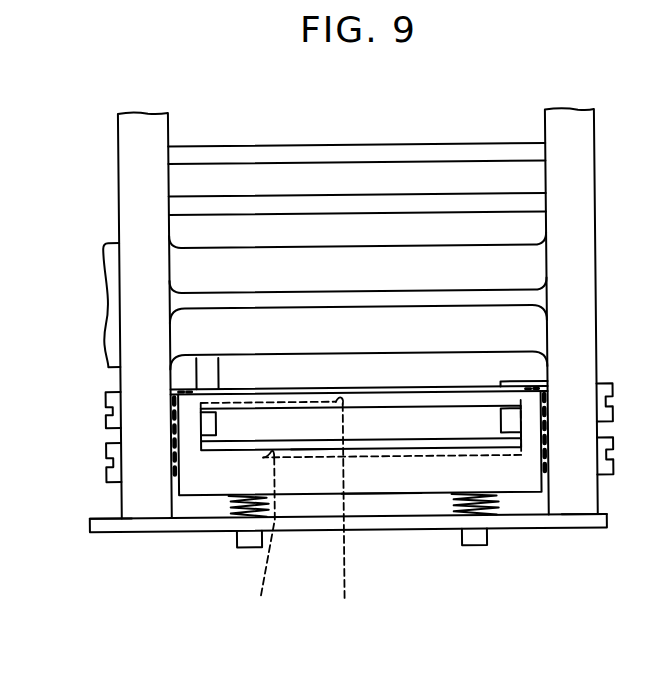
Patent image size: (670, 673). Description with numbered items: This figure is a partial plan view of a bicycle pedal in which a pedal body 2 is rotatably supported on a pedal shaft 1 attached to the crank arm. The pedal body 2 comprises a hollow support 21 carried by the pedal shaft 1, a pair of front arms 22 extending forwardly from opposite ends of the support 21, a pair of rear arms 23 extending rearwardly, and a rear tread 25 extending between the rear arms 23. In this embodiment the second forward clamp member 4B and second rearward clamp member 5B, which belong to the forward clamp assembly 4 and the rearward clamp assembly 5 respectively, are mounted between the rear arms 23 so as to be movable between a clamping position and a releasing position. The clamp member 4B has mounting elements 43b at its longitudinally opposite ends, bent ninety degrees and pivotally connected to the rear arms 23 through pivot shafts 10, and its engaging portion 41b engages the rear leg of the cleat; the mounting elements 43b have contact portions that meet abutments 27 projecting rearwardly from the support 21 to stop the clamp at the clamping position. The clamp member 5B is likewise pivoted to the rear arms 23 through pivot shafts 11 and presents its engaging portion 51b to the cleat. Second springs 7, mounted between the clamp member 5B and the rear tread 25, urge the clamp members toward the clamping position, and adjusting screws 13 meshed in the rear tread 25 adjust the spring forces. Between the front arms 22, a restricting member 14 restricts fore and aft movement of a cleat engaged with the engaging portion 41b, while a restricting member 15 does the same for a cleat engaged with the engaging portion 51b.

The pedal shaft 1 is at (112, 300).
The pedal body 2 is at (598, 270).
The forward clamp assembly 4 is at (398, 406).
The second forward clamp member 4B is at (303, 449).
The engaging portion 41b is at (354, 517).
The mounting elements 43b is at (187, 432).
The rearward clamp assembly 5 is at (430, 498).
The second rearward clamp member 5B is at (375, 488).
The engaging portion 51b is at (260, 541).
The second springs 7 is at (228, 501).
The pivot shafts 10 is at (107, 420).
The pivot shafts 11 is at (107, 472).
The adjusting screws 13 is at (233, 541).
The restricting member 14 is at (278, 148).
The restricting member 15 is at (378, 197).
The hollow support 21 is at (268, 259).
The front arms 22 is at (120, 151).
The rear arms 23 is at (128, 498).
The rear tread 25 is at (573, 530).
The abutments 27 is at (170, 391).